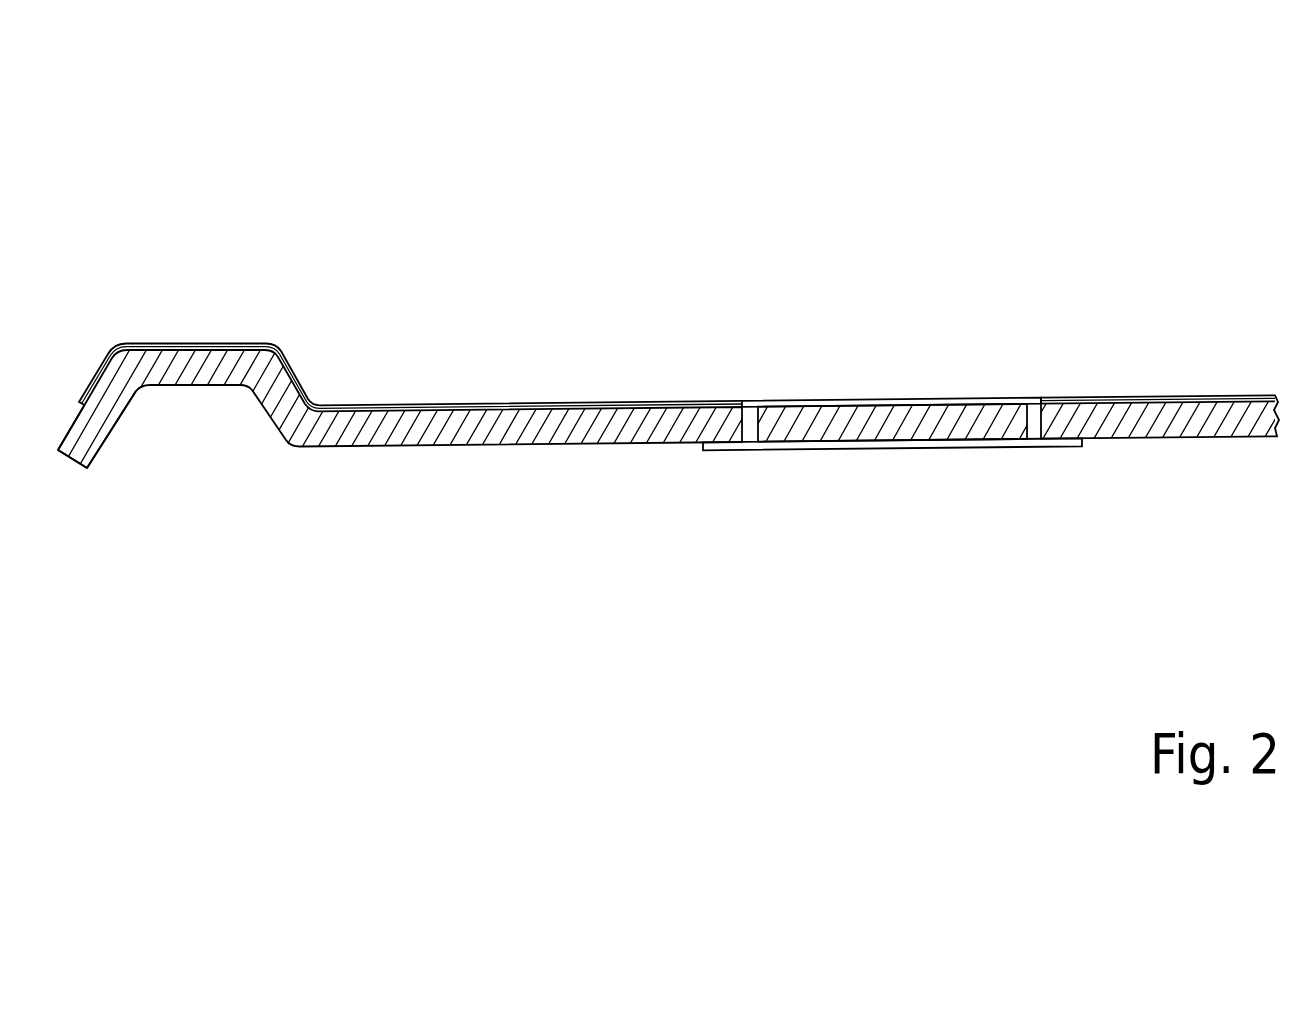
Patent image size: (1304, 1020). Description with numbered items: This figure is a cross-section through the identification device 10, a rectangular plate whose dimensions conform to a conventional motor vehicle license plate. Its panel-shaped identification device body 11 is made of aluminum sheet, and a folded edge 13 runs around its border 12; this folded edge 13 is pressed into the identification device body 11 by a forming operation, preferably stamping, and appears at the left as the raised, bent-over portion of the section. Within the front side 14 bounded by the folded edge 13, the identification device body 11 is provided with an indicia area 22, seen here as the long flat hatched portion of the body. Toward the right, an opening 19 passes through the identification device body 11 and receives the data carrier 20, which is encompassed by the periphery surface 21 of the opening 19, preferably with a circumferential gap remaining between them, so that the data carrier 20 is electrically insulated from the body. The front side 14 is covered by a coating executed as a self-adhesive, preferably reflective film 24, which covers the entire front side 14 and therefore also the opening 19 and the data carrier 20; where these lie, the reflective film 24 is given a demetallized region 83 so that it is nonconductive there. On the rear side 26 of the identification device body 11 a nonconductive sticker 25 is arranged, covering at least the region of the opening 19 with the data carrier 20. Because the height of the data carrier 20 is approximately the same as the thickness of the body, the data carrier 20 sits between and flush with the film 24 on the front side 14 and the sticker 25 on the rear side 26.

The identification device 10 is at (548, 302).
The identification device body 11 is at (1205, 420).
The border 12 is at (85, 452).
The folded edge 13 is at (187, 372).
The front side 14 is at (1111, 358).
The opening 19 is at (754, 408).
The data carrier 20 is at (915, 414).
The periphery surface 21 is at (1038, 420).
The indicia area 22 is at (518, 438).
The film 24 is at (673, 406).
The sticker 25 is at (1067, 444).
The rear side 26 is at (675, 508).
The demetallized region 83 is at (842, 402).